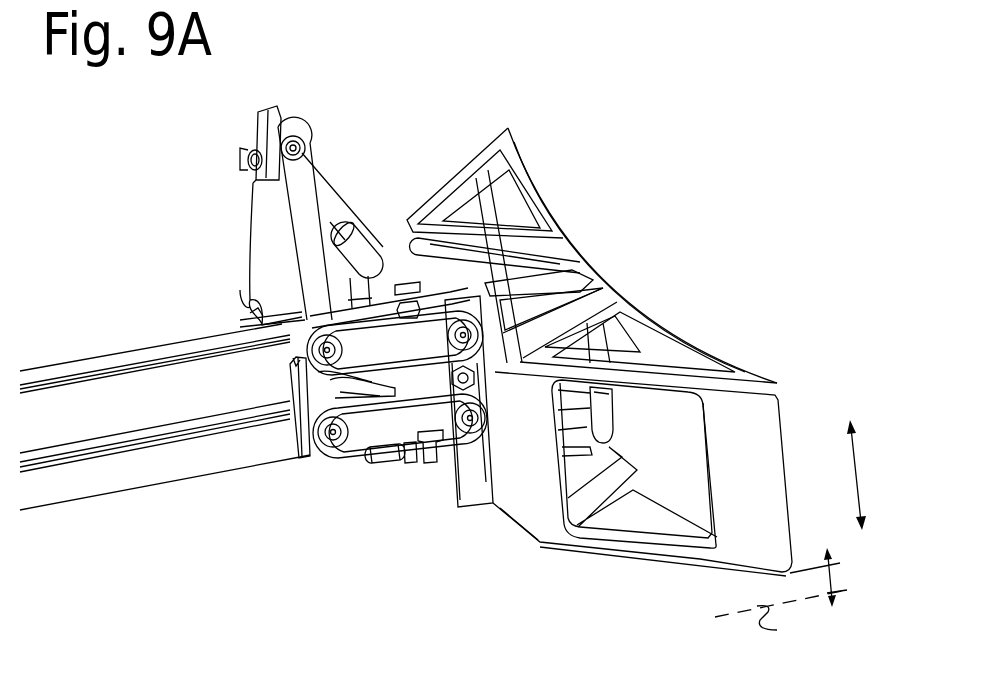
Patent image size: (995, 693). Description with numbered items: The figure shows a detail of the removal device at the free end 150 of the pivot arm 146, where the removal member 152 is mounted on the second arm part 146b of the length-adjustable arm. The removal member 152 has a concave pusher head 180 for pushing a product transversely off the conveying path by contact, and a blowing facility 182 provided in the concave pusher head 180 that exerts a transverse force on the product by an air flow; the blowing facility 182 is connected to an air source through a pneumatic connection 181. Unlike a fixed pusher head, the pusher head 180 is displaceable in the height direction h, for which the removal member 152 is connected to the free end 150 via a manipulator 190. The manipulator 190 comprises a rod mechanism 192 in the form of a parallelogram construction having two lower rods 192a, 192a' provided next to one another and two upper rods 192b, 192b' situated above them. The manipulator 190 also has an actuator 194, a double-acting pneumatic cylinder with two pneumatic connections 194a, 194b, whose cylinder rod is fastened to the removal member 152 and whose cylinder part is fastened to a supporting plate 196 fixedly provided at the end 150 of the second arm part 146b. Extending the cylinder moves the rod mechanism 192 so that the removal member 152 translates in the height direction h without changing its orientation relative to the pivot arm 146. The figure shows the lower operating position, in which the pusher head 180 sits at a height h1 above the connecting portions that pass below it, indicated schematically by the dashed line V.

The pivot arm 146 is at (88, 510).
The second arm part 146b is at (133, 470).
The free end 150 is at (264, 478).
The removal member 152 is at (583, 612).
The pusher head 180 is at (748, 355).
The pneumatic connection 181 is at (384, 455).
The blowing facility 182 is at (597, 403).
The manipulator 190 is at (422, 490).
The rod mechanism 192 is at (362, 437).
The lower rod 192a is at (467, 426).
The lower rod 192a' is at (260, 375).
The upper rod 192b is at (499, 290).
The upper rod 192b' is at (406, 225).
The actuator 194 is at (330, 172).
The pneumatic connection 194a is at (247, 153).
The pneumatic connection 194b is at (337, 250).
The supporting plate 196 is at (287, 245).
The height direction h is at (863, 475).
The height h1 is at (827, 577).
The dashed line V is at (781, 614).